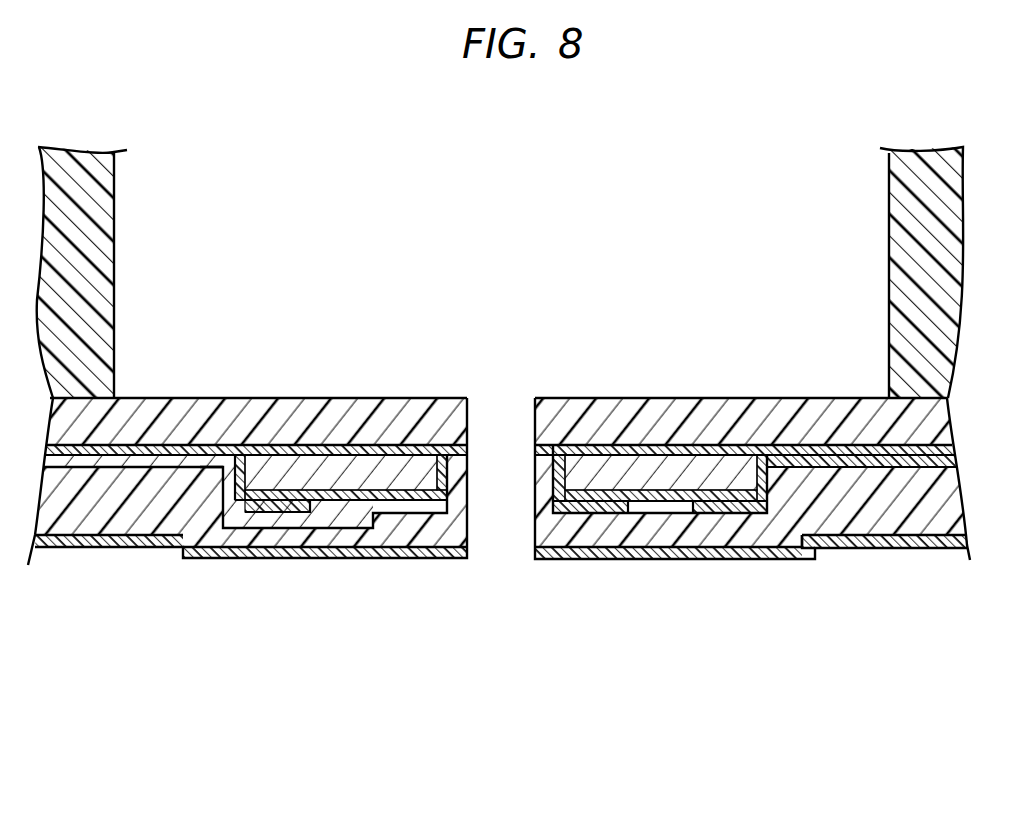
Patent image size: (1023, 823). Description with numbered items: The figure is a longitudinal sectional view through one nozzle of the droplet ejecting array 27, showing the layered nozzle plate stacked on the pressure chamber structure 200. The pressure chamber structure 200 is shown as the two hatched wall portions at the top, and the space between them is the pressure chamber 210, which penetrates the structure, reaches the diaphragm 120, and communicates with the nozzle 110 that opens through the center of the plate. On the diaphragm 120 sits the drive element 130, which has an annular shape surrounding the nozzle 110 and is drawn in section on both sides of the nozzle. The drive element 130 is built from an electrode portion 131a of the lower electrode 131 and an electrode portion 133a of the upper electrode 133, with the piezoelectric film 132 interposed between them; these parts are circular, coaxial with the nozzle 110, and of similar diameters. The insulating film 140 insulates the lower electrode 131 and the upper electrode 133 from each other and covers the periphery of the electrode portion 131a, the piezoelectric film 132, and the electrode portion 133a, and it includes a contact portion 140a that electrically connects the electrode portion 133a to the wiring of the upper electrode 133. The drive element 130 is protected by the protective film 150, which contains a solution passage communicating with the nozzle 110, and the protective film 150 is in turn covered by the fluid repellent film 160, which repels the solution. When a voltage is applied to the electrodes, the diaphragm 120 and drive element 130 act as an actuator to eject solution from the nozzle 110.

The droplet ejecting array 27 is at (865, 692).
The nozzle 110 is at (507, 543).
The diaphragm 120 is at (940, 422).
The drive element 130 is at (329, 502).
The lower electrode 131 is at (740, 470).
The electrode portion 131a is at (261, 552).
The piezoelectric film 132 is at (307, 482).
The upper electrode 133 is at (600, 513).
The electrode portion 133a is at (398, 490).
The insulating film 140 is at (945, 462).
The contact portion 140a is at (362, 492).
The protective film 150 is at (940, 503).
The fluid repellent film 160 is at (863, 533).
The pressure chamber structure 200 is at (941, 256).
The pressure chamber 210 is at (821, 202).